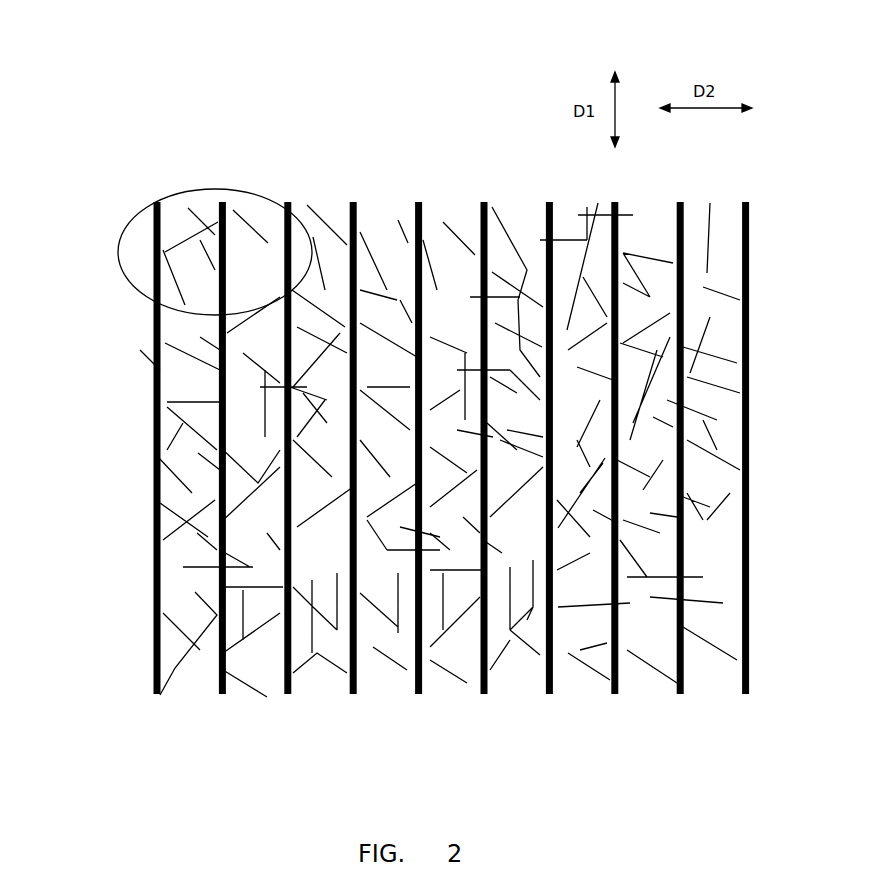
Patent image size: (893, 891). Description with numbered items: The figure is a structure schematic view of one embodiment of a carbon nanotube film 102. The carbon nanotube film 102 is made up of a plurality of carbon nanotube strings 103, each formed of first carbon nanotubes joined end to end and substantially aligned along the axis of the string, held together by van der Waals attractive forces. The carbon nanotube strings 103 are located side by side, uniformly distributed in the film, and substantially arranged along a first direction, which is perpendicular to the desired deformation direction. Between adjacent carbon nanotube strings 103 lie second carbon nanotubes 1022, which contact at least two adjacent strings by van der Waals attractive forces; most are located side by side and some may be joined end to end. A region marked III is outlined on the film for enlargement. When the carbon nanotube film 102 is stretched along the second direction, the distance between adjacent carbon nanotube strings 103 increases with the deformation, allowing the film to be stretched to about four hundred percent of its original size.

The carbon nanotube film 102 is at (386, 98).
The enlarged region III is at (147, 206).
The carbon nanotube string 103 is at (156, 362).
The second carbon nanotubes 1022 is at (160, 452).